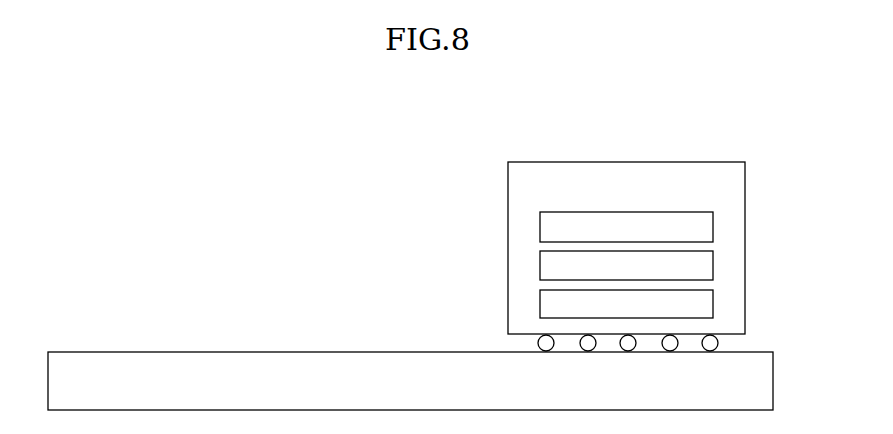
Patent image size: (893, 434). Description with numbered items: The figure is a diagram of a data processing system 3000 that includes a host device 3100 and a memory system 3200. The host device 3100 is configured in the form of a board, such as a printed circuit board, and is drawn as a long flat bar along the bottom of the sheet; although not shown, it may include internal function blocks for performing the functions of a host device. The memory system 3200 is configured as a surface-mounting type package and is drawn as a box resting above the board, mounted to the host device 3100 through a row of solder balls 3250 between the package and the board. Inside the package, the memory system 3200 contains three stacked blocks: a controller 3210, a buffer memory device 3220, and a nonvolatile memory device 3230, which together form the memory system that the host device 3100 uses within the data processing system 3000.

The data processing system 3000 is at (112, 102).
The host device 3100 is at (410, 381).
The memory system 3200 is at (626, 248).
The controller 3210 is at (626, 228).
The buffer memory device 3220 is at (626, 266).
The nonvolatile memory device 3230 is at (626, 305).
The solder balls 3250 is at (730, 344).